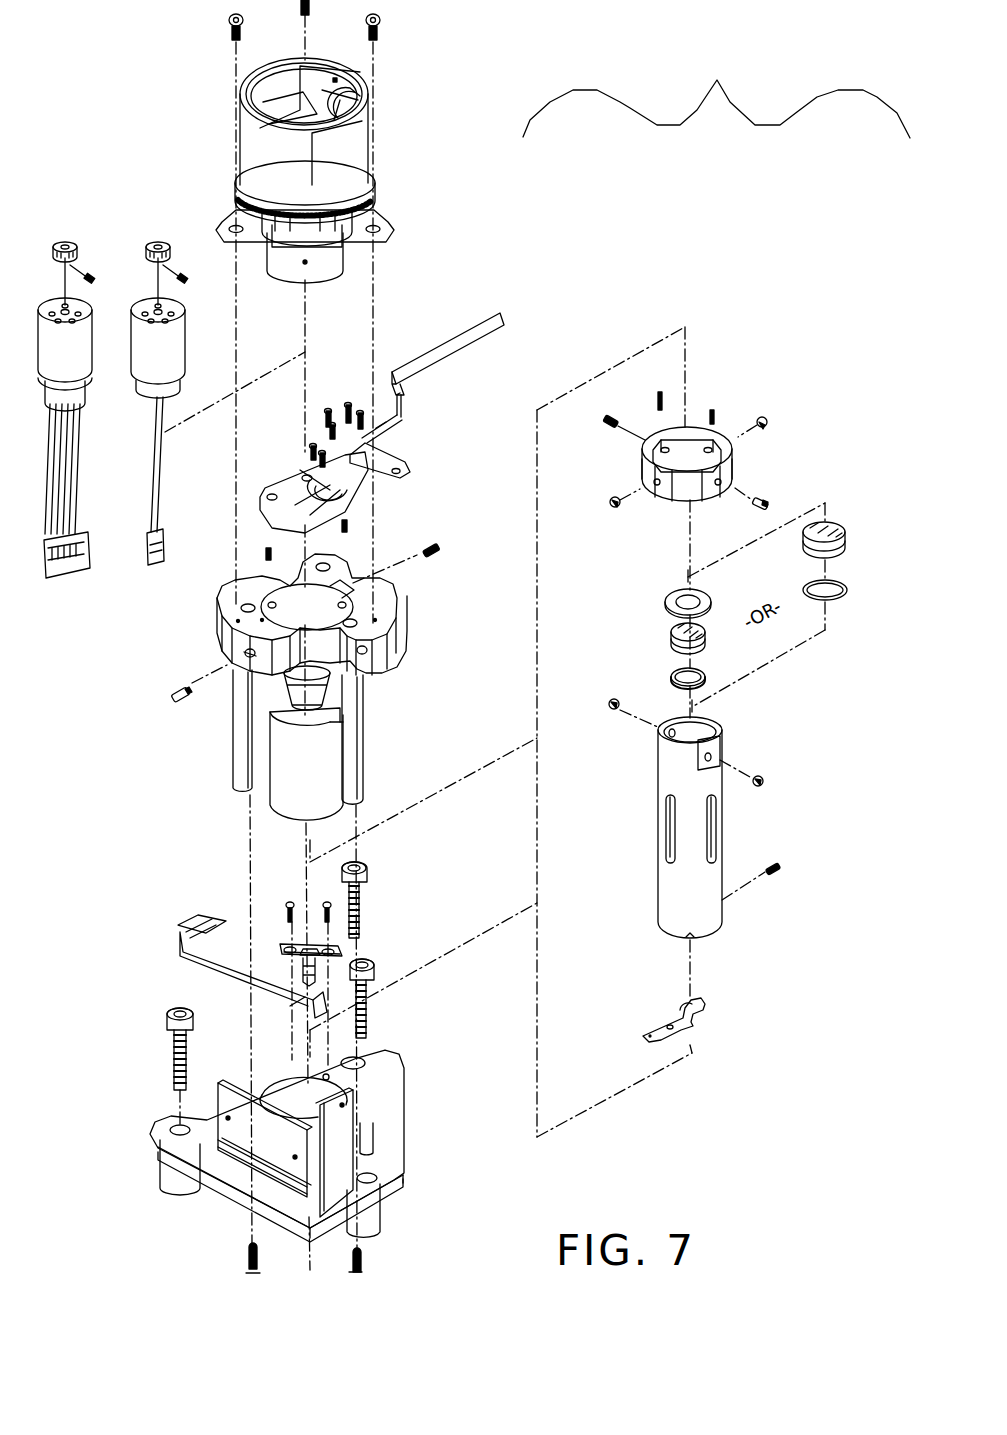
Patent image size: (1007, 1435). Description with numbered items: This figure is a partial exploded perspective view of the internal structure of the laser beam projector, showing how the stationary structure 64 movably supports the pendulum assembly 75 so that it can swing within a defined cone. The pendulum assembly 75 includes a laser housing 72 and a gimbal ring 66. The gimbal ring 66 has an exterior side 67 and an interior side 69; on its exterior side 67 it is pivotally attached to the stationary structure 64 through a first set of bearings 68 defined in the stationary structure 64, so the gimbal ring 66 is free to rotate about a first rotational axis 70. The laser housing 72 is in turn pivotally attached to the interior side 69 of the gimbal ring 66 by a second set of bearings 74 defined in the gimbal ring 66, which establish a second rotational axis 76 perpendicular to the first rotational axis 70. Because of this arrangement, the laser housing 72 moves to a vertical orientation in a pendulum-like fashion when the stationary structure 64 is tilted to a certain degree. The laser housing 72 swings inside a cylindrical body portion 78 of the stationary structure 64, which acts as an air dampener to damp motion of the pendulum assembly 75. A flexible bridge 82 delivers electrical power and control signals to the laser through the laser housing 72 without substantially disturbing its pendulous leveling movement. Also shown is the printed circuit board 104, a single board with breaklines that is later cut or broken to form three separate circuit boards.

The stationary structure 64 is at (383, 600).
The gimbal ring 66 is at (710, 437).
The exterior side 67 is at (683, 488).
The first set of bearings 68 is at (766, 420).
The interior side 69 is at (713, 465).
The first rotational axis 70 is at (195, 684).
The laser housing 72 is at (685, 778).
The second set of bearings 74 is at (611, 708).
The pendulum assembly 75 is at (716, 89).
The second rotational axis 76 is at (740, 490).
The cylindrical body portion 78 is at (292, 751).
The bridge 82 is at (350, 498).
The printed circuit board 104 is at (382, 463).